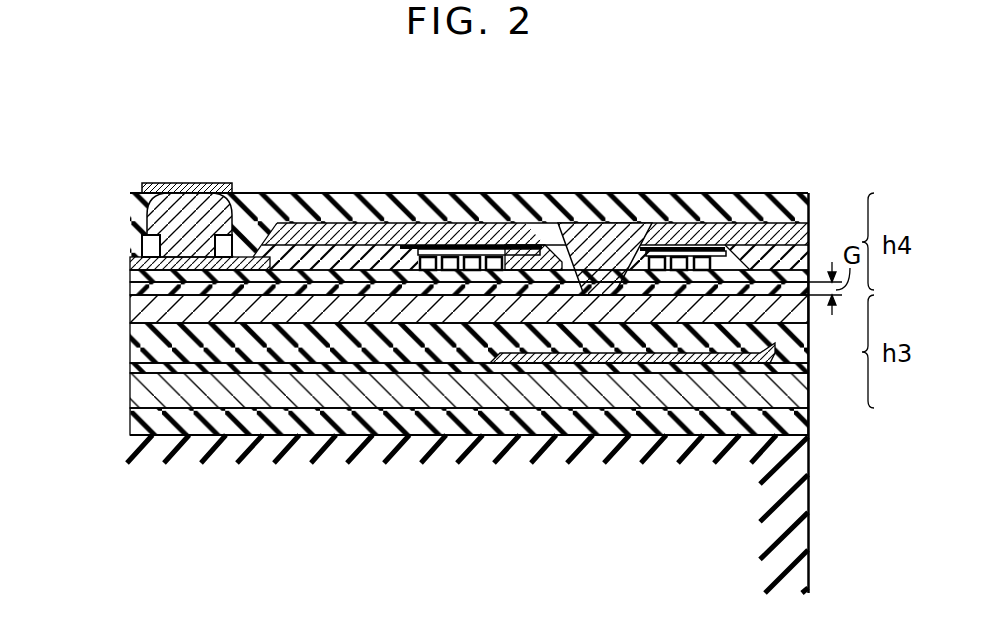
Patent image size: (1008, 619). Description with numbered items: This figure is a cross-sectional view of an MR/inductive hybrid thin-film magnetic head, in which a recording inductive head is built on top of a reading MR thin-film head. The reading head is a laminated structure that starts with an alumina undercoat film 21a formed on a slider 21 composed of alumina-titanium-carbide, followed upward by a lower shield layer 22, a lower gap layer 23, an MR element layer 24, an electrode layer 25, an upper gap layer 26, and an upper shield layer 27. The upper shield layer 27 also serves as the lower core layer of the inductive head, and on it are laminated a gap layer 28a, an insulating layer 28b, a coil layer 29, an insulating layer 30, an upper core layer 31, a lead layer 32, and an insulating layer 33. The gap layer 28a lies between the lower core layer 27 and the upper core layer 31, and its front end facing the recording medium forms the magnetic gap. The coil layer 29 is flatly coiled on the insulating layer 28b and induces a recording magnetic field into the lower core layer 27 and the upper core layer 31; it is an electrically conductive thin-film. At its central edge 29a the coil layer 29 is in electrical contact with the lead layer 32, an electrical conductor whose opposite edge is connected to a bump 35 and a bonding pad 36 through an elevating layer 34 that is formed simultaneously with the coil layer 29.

The slider 21 is at (790, 502).
The alumina undercoat film 21a is at (790, 416).
The lower shield layer 22 is at (555, 385).
The lower gap layer 23 is at (352, 366).
The MR element layer 24 is at (778, 352).
The electrode layer 25 is at (675, 356).
The upper gap layer 26 is at (425, 345).
The upper shield layer 27 is at (470, 305).
The gap layer 28a is at (330, 290).
The insulating layer 28b is at (402, 282).
The coil layer 29 is at (473, 252).
The central edge 29a is at (520, 238).
The insulating layer 30 is at (292, 258).
The upper core layer 31 is at (583, 255).
The lead layer 32 is at (497, 235).
The insulating layer 33 is at (373, 212).
The elevating layer 34 is at (140, 263).
The bump 35 is at (172, 217).
The bonding pad 36 is at (196, 183).